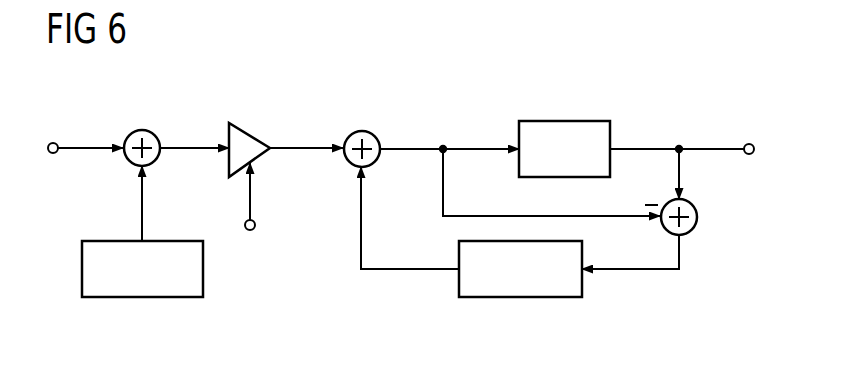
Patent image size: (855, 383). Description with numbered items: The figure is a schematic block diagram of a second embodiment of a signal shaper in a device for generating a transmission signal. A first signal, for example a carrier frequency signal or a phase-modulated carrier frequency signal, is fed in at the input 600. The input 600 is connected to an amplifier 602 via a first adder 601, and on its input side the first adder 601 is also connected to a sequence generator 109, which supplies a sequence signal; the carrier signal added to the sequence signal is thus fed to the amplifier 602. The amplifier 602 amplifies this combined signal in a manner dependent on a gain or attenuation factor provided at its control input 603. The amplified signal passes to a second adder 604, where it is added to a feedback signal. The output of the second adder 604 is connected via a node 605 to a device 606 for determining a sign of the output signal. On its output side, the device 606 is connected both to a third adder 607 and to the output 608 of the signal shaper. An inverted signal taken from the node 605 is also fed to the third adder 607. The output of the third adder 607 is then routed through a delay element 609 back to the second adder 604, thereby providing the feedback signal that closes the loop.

The input 600 is at (53, 143).
The first adder 601 is at (143, 129).
The amplifier 602 is at (259, 136).
The control input 603 is at (256, 224).
The second adder 604 is at (361, 127).
The node 605 is at (443, 142).
The device for determining a sign of the output signal 606 is at (565, 119).
The third adder 607 is at (697, 217).
The output 608 is at (752, 143).
The delay element 609 is at (521, 297).
The sequence generator 109 is at (203, 268).